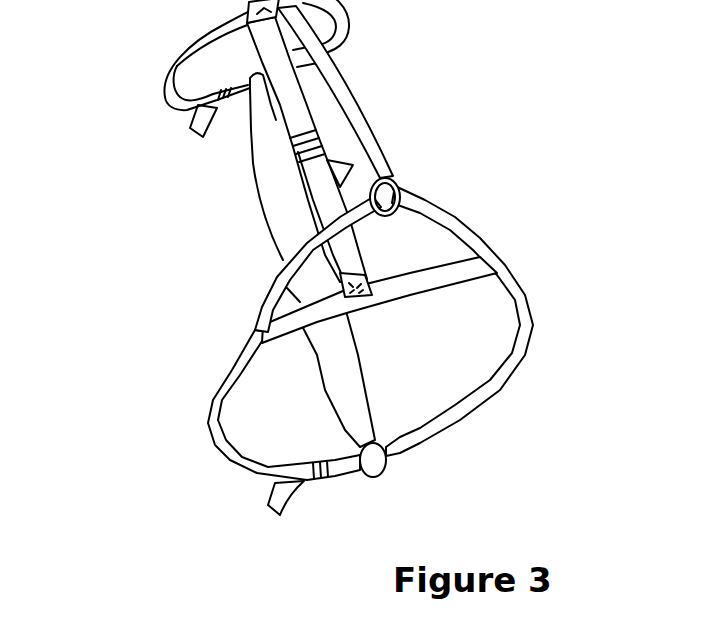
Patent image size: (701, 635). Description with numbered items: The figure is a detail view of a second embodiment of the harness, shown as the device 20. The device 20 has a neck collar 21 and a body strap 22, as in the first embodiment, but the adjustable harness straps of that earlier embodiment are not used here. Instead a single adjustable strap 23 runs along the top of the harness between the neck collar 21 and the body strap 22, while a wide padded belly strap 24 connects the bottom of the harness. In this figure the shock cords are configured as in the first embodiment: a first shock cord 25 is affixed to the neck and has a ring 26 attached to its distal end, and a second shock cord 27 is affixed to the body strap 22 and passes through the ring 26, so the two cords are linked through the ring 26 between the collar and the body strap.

The device 20 is at (185, 283).
The neck collar 21 is at (152, 87).
The body strap 22 is at (211, 441).
The adjustable strap 23 is at (303, 101).
The padded belly strap 24 is at (243, 188).
The first shock cord 25 is at (378, 130).
The ring 26 is at (398, 187).
The second shock cord 27 is at (478, 229).